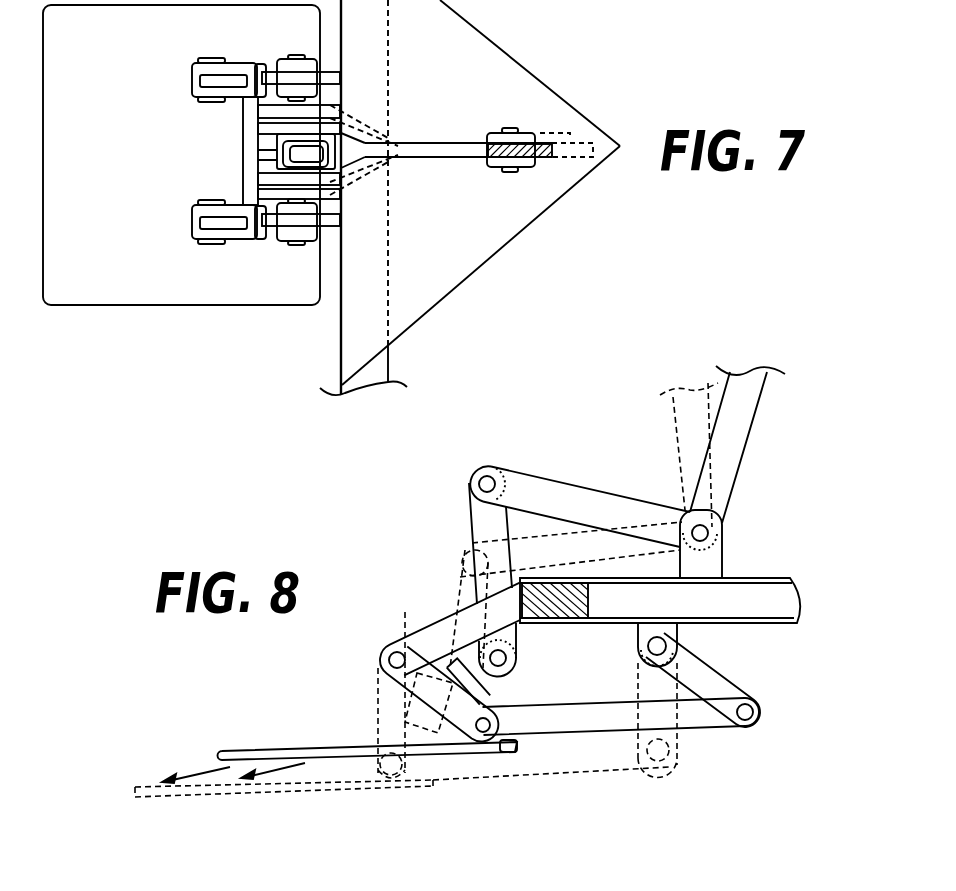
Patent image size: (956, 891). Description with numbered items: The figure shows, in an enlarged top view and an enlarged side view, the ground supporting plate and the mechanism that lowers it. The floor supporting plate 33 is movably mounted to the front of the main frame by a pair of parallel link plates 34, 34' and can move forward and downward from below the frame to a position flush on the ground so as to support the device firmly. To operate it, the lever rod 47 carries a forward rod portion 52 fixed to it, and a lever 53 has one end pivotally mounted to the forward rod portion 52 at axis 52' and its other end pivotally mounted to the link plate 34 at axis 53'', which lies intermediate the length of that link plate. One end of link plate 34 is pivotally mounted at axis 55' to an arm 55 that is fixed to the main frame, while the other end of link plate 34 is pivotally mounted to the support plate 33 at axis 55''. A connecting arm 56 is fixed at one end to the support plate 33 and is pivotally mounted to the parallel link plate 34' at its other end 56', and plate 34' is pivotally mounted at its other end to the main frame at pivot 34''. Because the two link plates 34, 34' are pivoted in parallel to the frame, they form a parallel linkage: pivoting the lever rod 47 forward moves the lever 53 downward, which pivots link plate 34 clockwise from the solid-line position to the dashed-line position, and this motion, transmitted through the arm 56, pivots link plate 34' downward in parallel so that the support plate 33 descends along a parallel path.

In FIG. 8, the floor supporting plate 33 is at (220, 750).
In FIG. 7, the parallel link plate 34 is at (195, 142).
In FIG. 8, the parallel link plate 34 is at (504, 681).
In FIG. 8, the parallel link plate 34' is at (723, 680).
In FIG. 8, the pivot 34'' is at (694, 645).
In FIG. 7, the lever rod 47 is at (543, 133).
In FIG. 8, the lever rod 47 is at (750, 420).
In FIG. 7, the forward rod portion 52 is at (458, 126).
In FIG. 8, the forward rod portion 52 is at (586, 496).
In FIG. 7, the axis 52' is at (194, 153).
In FIG. 8, the axis 52' is at (462, 473).
In FIG. 8, the lever 53 is at (459, 580).
In FIG. 7, the axis 53'' is at (254, 152).
In FIG. 8, the axis 53'' is at (533, 648).
In FIG. 7, the arm 55 is at (289, 156).
In FIG. 8, the arm 55 is at (436, 662).
In FIG. 8, the axis 55' is at (363, 666).
In FIG. 8, the axis 55'' is at (508, 773).
In FIG. 7, the connecting arm 56 is at (364, 127).
In FIG. 8, the connecting arm 56 is at (621, 697).
In FIG. 8, the pivot 56' is at (736, 741).